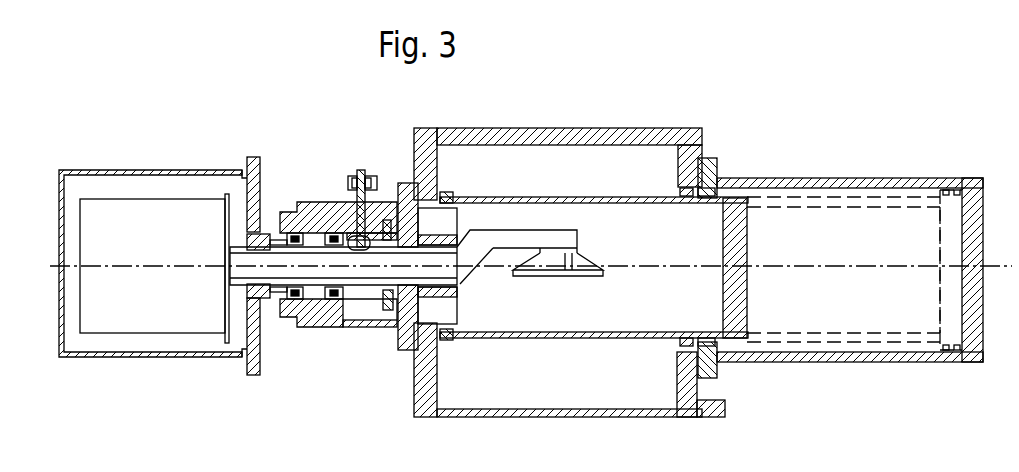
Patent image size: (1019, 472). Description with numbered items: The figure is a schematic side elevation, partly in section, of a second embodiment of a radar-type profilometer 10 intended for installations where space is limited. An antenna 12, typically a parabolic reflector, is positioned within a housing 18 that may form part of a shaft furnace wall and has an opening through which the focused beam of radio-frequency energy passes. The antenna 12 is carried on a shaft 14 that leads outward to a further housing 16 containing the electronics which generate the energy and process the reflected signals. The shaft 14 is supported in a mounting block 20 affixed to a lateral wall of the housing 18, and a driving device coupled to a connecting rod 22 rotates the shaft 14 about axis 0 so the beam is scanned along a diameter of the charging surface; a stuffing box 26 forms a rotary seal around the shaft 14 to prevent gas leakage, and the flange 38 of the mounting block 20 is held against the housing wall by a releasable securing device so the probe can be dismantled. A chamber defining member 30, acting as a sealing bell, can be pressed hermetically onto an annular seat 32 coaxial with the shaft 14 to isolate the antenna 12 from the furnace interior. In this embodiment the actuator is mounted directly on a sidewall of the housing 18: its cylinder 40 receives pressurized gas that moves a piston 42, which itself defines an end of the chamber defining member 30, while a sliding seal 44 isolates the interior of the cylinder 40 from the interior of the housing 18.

The axis 0 is at (687, 270).
The profilometer 10 is at (308, 183).
The antenna 12 is at (575, 277).
The shaft 14 is at (272, 276).
The further housing 16 is at (147, 170).
The housing 18 is at (610, 160).
The mounting block 20 is at (310, 315).
The connecting rod 22 is at (360, 172).
The stuffing box 26 is at (382, 302).
The chamber defining member 30 is at (538, 339).
The annular seat 32 is at (450, 194).
The flange 38 is at (408, 345).
The cylinder 40 is at (831, 179).
The actuator piston 42 is at (738, 305).
The sliding seal 44 is at (713, 165).